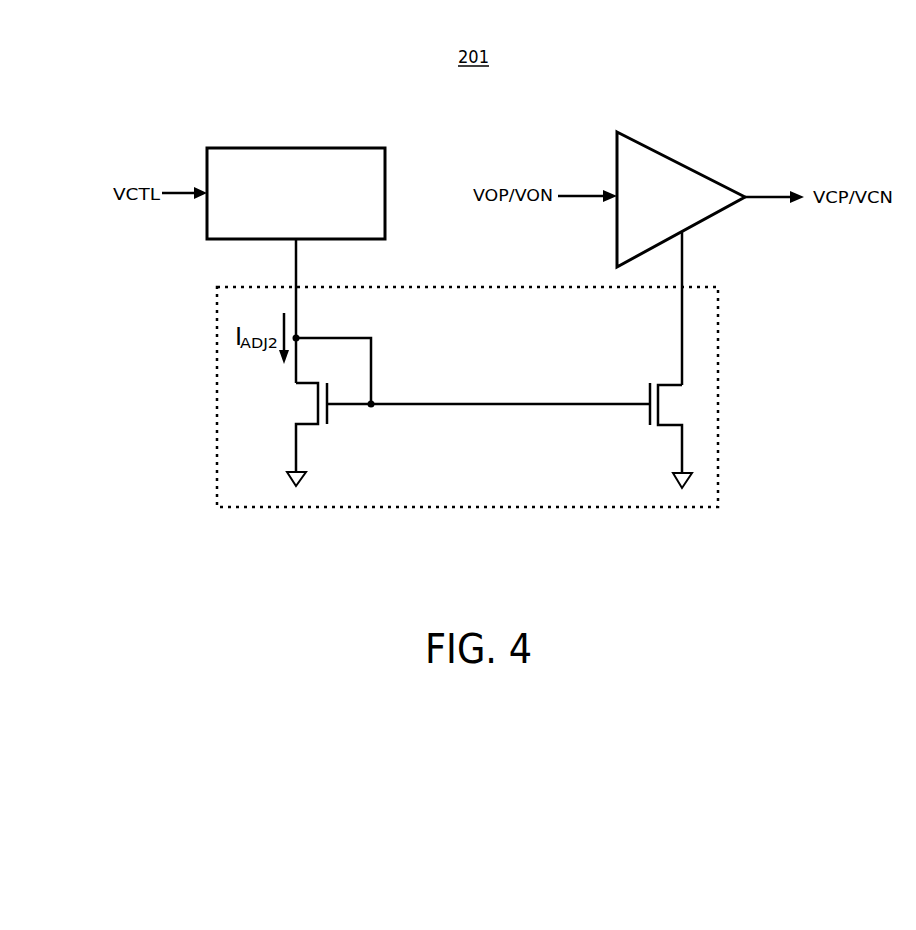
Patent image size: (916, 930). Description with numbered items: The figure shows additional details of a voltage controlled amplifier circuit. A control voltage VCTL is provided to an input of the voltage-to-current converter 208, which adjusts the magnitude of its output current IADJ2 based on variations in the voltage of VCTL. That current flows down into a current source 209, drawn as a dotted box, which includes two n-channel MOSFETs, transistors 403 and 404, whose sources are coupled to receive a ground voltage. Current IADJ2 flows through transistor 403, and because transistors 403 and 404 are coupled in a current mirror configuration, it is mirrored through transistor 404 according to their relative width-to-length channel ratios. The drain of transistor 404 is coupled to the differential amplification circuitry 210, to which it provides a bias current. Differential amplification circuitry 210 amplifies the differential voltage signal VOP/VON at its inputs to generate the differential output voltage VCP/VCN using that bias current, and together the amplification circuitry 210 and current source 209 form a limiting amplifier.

The voltage-to-current converter 208 is at (273, 147).
The differential amplification circuitry 210 is at (675, 160).
The current source 209 is at (216, 462).
The n-channel transistor 403 is at (330, 420).
The n-channel transistor 404 is at (650, 425).